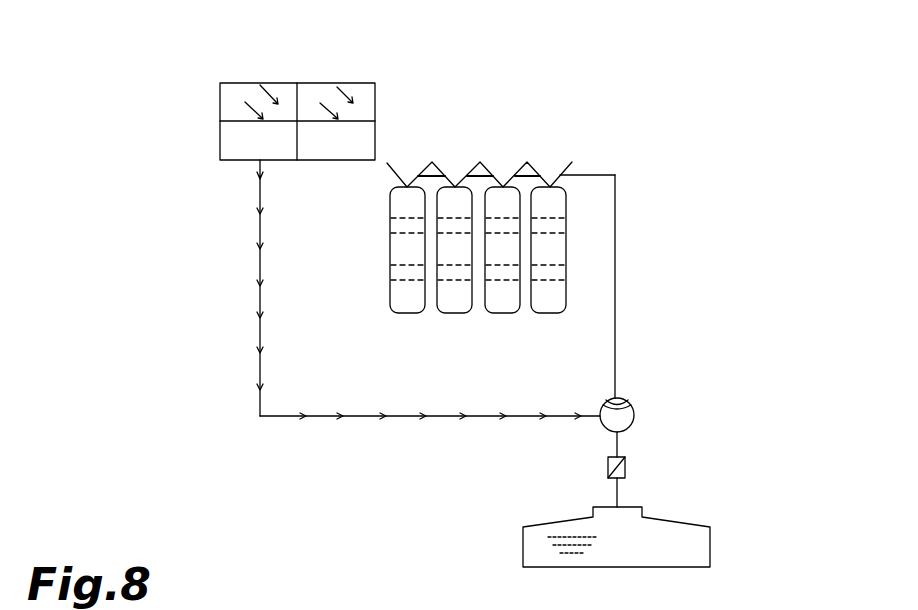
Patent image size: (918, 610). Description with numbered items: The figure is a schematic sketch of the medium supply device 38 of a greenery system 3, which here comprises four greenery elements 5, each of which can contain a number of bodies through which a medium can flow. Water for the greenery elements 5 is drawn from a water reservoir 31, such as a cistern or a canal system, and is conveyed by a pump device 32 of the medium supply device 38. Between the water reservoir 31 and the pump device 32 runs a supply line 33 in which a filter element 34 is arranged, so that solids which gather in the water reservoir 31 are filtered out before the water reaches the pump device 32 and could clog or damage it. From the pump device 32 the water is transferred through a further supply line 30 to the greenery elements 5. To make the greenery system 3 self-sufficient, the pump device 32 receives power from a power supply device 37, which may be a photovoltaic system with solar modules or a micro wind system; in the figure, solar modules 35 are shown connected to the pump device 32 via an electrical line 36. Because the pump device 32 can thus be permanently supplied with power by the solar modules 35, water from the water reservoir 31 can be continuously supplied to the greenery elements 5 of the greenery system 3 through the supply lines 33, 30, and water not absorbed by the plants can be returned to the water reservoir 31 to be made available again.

The greenery system 3 is at (699, 116).
The greenery element 5 is at (407, 290).
The supply line 30 is at (617, 287).
The water reservoir 31 is at (700, 540).
The pump device 32 is at (631, 419).
The supply line 33 is at (616, 486).
The filter element 34 is at (625, 466).
The solar modules 35 is at (376, 102).
The electrical line 36 is at (260, 362).
The power supply device 37 is at (250, 285).
The medium supply device 38 is at (178, 170).